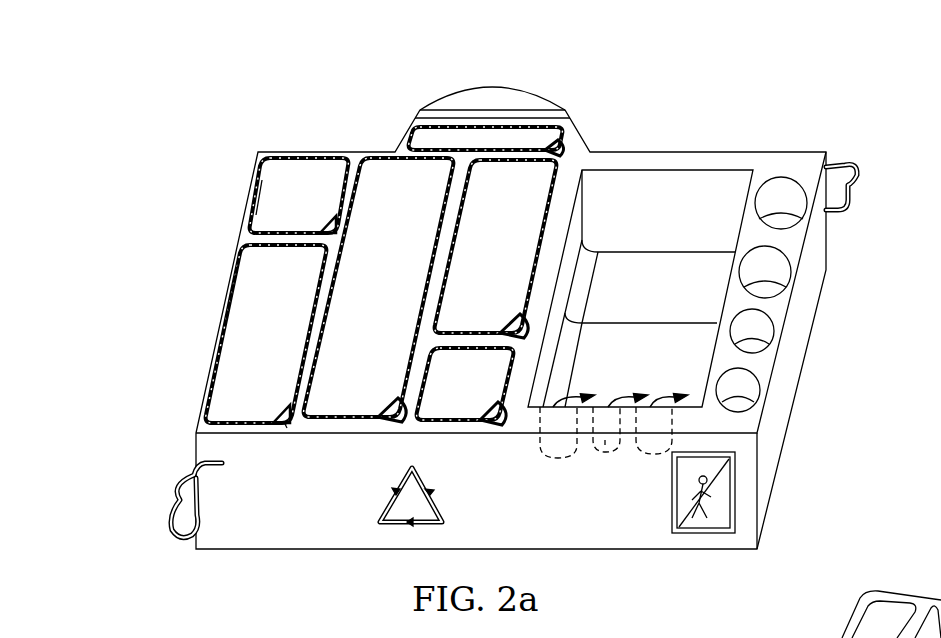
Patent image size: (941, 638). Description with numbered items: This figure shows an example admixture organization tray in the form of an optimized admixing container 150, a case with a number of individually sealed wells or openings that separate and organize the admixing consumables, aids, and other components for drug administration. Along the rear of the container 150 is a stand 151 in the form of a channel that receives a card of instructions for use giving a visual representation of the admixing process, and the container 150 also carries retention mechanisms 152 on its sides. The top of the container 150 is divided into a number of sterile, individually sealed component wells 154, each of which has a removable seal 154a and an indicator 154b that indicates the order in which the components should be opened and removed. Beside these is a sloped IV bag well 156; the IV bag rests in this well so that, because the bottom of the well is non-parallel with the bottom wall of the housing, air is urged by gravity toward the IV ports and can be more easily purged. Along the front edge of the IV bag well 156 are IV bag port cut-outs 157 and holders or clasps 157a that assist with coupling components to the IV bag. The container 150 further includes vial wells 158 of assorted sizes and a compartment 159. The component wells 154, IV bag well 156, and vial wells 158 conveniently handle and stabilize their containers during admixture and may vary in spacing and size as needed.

The admixing container 150 is at (285, 528).
The stand 151 is at (412, 106).
The retention mechanism 152 is at (172, 513).
The component well 154 is at (523, 200).
The removable seal 154a is at (337, 214).
The indicator 154b is at (272, 207).
The IV bag well 156 is at (670, 195).
The IV bag port cut-out 157 is at (547, 455).
The holder/clasp 157a is at (285, 424).
The vial well 158 is at (805, 211).
The compartment 159 is at (771, 150).